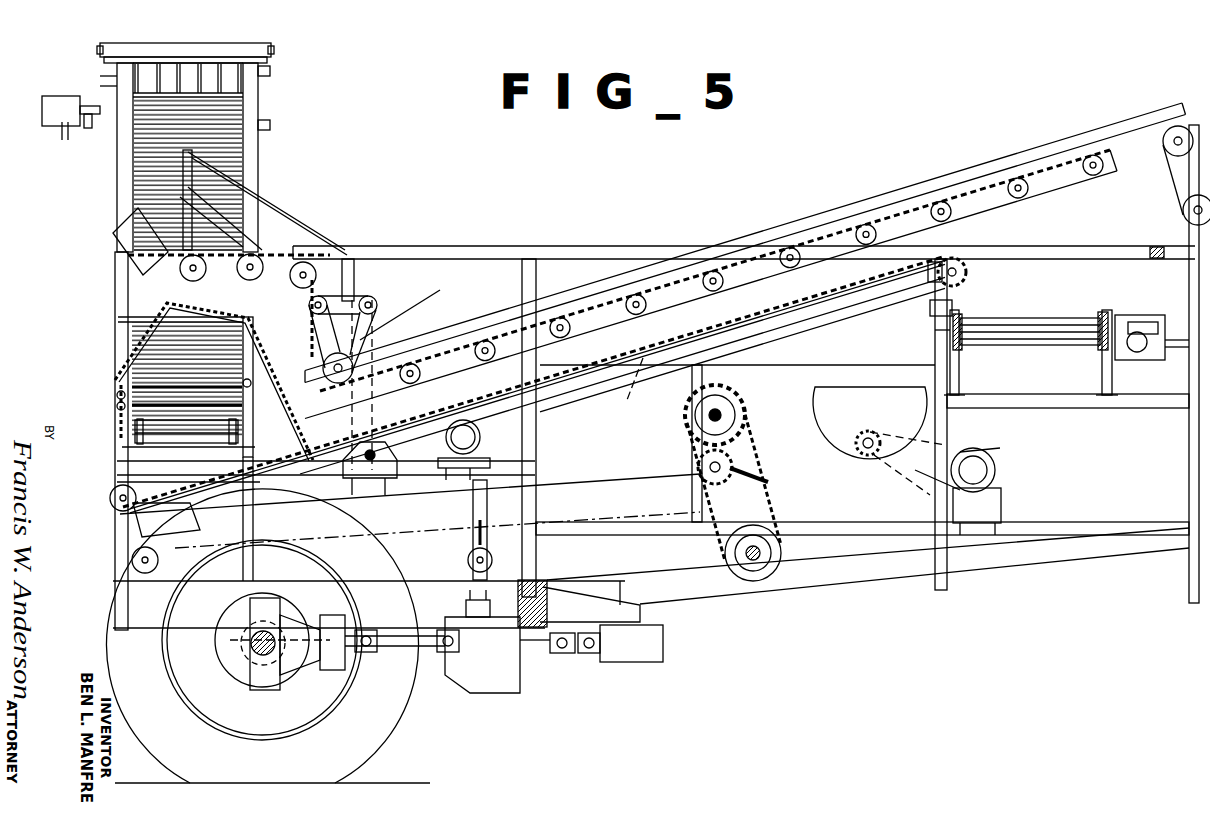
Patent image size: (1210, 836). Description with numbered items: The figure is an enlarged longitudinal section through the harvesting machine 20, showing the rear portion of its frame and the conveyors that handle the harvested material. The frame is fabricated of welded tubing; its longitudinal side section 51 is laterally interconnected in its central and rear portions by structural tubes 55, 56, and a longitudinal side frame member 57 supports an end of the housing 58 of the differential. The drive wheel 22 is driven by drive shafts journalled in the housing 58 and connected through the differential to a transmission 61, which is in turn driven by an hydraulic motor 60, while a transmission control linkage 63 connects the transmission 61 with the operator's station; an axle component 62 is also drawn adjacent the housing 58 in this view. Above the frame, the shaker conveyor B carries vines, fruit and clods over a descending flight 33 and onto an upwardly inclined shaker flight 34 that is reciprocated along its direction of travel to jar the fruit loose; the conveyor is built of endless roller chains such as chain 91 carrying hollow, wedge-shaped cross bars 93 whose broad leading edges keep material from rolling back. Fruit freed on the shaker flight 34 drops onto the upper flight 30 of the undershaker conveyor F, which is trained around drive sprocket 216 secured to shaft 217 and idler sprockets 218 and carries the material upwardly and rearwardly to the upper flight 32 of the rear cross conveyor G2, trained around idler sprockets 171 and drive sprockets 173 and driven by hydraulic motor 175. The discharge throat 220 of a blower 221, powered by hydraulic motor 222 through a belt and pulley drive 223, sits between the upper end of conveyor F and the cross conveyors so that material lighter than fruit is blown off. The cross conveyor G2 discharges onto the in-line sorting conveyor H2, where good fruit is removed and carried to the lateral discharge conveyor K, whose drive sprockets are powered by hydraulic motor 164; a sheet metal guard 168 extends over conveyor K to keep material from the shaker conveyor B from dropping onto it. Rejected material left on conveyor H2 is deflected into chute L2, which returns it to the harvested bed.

The harvesting machine 20 is at (815, 122).
The drive wheel 22 is at (400, 745).
The upper flight 30 is at (666, 308).
The upper flight 32 is at (1010, 348).
The descending flight 33 is at (283, 262).
The shaker flight 34 is at (765, 252).
The longitudinal side section 51 is at (472, 248).
The structural tube 55 is at (560, 592).
The structural tube 56 is at (1155, 250).
The side frame member 57 is at (369, 604).
The housing 58 is at (245, 650).
The hydraulic motor 60 is at (591, 643).
The transmission 61 is at (482, 641).
The axle housing 62 is at (266, 690).
The transmission control linkage 63 is at (396, 648).
The endless roller chain 91 is at (312, 283).
The cross bar 93 is at (850, 235).
The hydraulic motor 164 is at (62, 97).
The sheet metal guard 168 is at (232, 318).
The idler sprockets 171 is at (935, 332).
The drive sprockets 173 is at (1095, 355).
The hydraulic motor 175 is at (1163, 338).
The drive sprocket 216 is at (728, 405).
The shaft 217 is at (722, 418).
The idler sprockets 218 is at (732, 460).
The discharge throat 220 is at (965, 312).
The blower 221 is at (886, 441).
The hydraulic motor 222 is at (995, 466).
The belt and pulley drive 223 is at (950, 448).
The shaker conveyor B is at (720, 255).
The undershaker conveyor F is at (627, 480).
The rear cross conveyor G2 is at (1045, 318).
The in-line sorting conveyor H2 is at (1130, 318).
The discharge conveyor K is at (250, 140).
The chute L2 is at (432, 312).